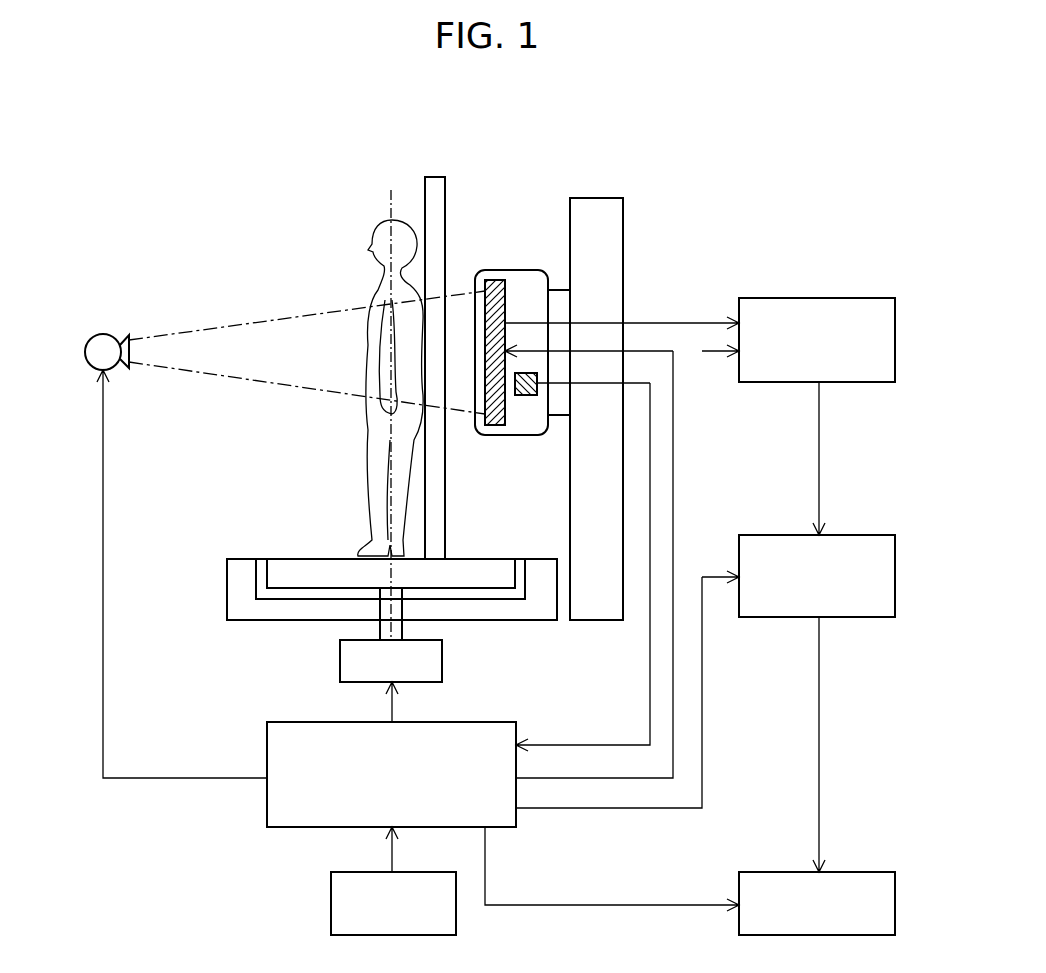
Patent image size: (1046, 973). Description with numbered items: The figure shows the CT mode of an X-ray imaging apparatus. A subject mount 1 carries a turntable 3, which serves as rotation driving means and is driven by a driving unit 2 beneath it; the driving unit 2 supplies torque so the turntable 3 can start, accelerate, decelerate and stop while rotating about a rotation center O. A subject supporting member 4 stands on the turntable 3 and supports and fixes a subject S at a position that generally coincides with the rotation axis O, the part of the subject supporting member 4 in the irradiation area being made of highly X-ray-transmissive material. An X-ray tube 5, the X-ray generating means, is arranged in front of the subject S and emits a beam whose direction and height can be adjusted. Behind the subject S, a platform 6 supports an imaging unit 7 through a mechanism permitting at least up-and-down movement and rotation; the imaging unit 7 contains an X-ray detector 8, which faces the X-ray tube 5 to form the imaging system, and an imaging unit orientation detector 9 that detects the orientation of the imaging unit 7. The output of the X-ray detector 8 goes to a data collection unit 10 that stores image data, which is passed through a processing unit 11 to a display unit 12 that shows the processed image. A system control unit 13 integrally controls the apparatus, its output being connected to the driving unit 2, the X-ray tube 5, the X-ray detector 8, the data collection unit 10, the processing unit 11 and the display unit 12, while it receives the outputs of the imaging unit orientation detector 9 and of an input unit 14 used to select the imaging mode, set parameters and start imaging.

The subject mount 1 is at (237, 585).
The driving unit 2 is at (348, 659).
The turntable 3 is at (296, 565).
The subject supporting member 4 is at (437, 185).
The X-ray tube 5 is at (110, 334).
The platform 6 is at (605, 205).
The imaging unit 7 is at (525, 271).
The X-ray detector 8 is at (492, 290).
The imaging unit orientation detector 9 is at (523, 395).
The data collection unit 10 is at (868, 298).
The processing unit 11 is at (868, 535).
The display unit 12 is at (868, 872).
The system control unit 13 is at (267, 738).
The input unit 14 is at (331, 886).
The subject S is at (378, 233).
The rotation axis O is at (392, 216).